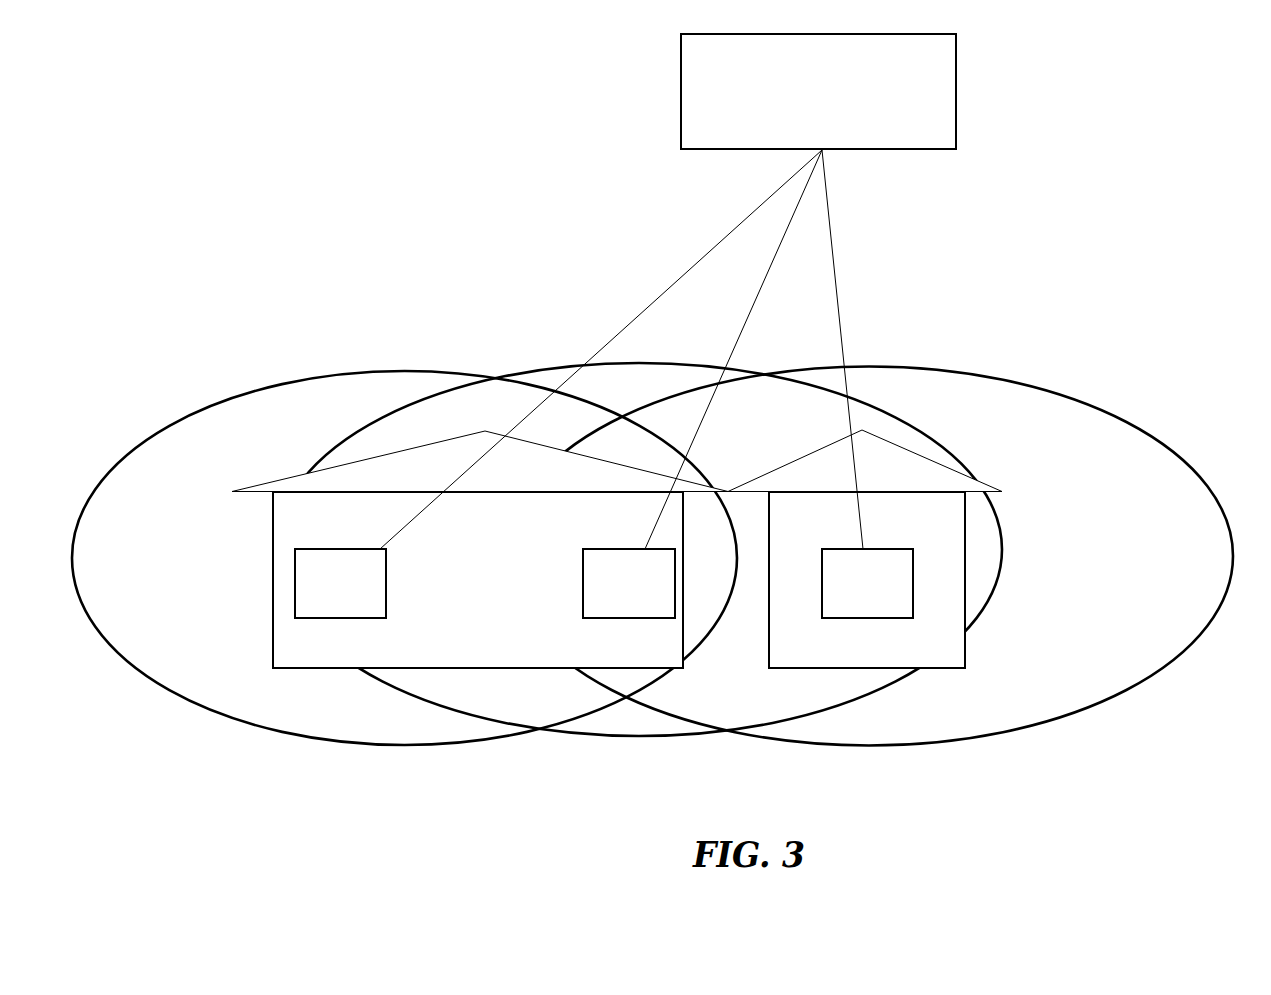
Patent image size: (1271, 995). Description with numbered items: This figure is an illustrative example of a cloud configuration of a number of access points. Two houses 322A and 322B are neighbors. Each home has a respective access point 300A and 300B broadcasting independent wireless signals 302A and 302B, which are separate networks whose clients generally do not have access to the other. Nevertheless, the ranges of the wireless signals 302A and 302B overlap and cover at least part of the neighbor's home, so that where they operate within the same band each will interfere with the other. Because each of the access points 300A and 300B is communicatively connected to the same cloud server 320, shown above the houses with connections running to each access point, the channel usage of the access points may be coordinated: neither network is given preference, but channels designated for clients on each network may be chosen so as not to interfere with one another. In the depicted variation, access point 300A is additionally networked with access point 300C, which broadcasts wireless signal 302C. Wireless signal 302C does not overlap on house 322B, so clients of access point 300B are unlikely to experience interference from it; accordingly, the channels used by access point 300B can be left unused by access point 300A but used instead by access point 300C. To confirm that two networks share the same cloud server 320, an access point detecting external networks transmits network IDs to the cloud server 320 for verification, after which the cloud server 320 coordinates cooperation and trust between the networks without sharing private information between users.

The cloud server 320 is at (818, 91).
The wireless signal 302A is at (610, 399).
The wireless signal 302B is at (860, 399).
The wireless signal 302C is at (318, 399).
The house 322A is at (480, 461).
The house 322B is at (865, 461).
The access point 300A is at (702, 384).
The access point 300B is at (867, 384).
The access point 300C is at (558, 384).